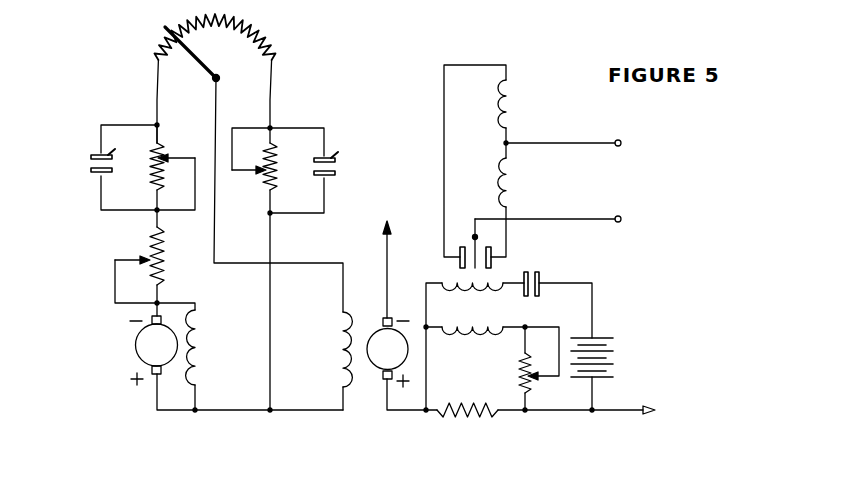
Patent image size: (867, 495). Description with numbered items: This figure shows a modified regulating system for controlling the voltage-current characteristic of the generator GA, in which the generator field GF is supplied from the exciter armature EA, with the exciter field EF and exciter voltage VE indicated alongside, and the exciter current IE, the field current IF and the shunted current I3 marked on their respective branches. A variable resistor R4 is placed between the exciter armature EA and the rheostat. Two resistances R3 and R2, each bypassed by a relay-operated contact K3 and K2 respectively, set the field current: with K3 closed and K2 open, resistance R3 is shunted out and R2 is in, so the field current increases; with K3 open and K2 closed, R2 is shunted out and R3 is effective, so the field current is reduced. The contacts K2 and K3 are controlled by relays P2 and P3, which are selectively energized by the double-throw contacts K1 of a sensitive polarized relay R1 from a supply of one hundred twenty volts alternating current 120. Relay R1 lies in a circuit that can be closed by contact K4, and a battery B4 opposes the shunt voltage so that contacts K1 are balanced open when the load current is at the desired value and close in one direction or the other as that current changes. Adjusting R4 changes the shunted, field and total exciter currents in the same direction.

The exciter current through arc potentiometer IE is at (184, 52).
The resistance R3' R3 is at (165, 160).
The contact K3' K3 is at (90, 157).
The resistance R2' R2 is at (267, 178).
The contact K2' K2 is at (336, 174).
The field current IF is at (325, 257).
The variable resistor R4 is at (164, 257).
The exciter armature EA is at (154, 350).
The exciter field winding EF is at (193, 340).
The exciter voltage VE is at (215, 304).
The current I3 is at (278, 330).
The generator field winding GF is at (342, 340).
The generator GA is at (388, 304).
The relay R1 is at (476, 290).
The contact K4 is at (540, 276).
The battery B4 is at (606, 369).
The double-throw contacts K1 is at (494, 252).
The relay P2 is at (508, 107).
The relay P3 is at (508, 191).
The 120 V.A.C. supply terminals 120 is at (554, 181).